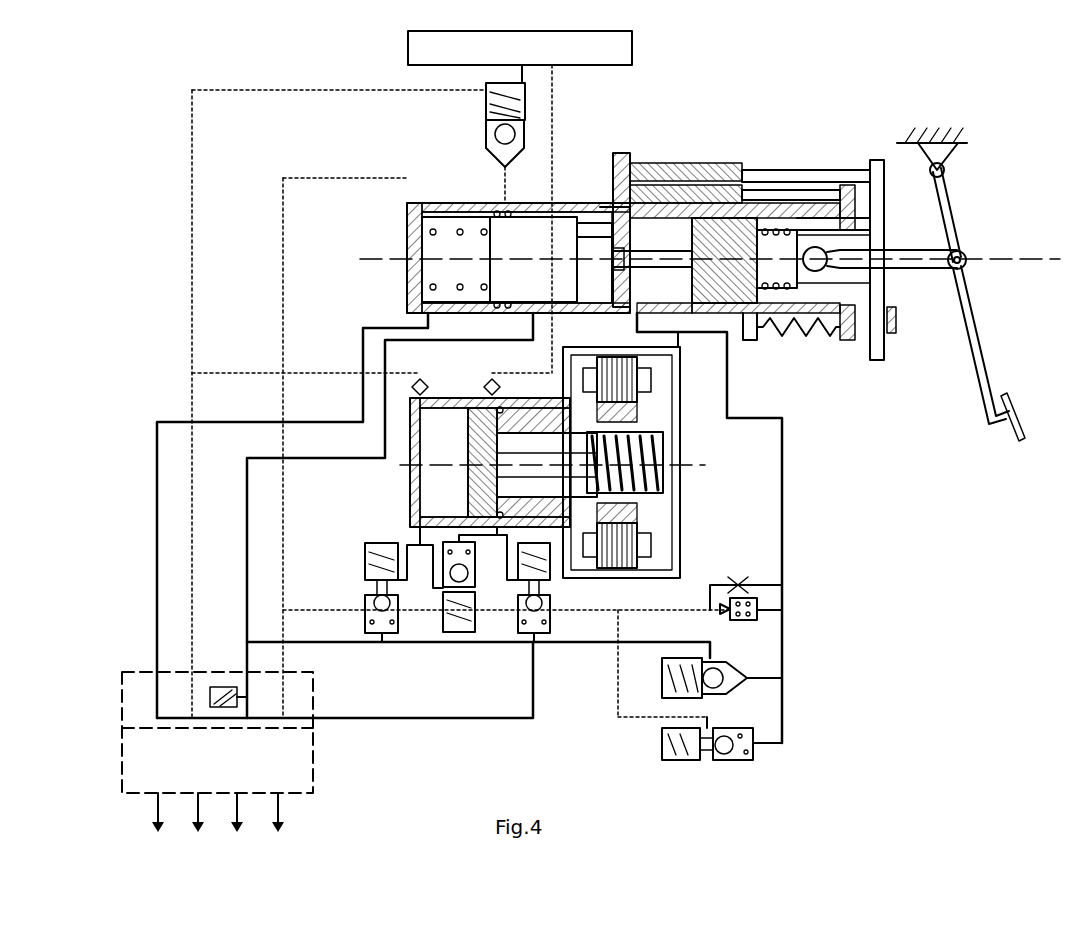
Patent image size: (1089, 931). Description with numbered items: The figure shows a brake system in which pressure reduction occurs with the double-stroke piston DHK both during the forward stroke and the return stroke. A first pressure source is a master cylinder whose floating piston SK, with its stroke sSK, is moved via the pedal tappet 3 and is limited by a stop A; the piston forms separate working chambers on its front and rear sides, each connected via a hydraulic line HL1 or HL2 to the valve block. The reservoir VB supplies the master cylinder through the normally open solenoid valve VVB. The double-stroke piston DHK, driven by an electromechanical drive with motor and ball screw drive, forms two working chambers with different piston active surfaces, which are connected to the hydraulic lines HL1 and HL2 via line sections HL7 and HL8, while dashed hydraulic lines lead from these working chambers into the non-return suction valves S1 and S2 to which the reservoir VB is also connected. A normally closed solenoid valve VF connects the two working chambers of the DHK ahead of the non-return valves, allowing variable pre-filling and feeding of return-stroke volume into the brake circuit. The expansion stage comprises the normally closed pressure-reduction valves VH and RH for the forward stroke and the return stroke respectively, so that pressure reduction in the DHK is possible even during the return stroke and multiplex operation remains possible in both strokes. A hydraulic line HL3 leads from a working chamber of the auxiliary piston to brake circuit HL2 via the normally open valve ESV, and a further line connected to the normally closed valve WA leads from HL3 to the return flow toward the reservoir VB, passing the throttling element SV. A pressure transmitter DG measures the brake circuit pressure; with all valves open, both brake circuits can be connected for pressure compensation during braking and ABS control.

The reservoir VB is at (520, 57).
The normally open solenoid valve VVB is at (486, 126).
The stop A is at (600, 207).
The pedal tappet 3 is at (668, 252).
The piston stroke of piston SK sSK is at (412, 192).
The non-return valve or suction valve S1 is at (420, 380).
The non-return valve or suction valve S2 is at (492, 380).
The double-stroke piston DHK is at (478, 427).
The hydraulic line or brake circuit section HL1 is at (157, 494).
The hydraulic line or brake circuit section HL2 is at (247, 494).
The hydraulic line HL3 is at (782, 536).
The hydraulic line or brake circuit section HL7 is at (316, 648).
The hydraulic line or brake circuit section HL8 is at (372, 722).
The Pab-VH normally closed solenoid valve VH is at (365, 552).
The normally closed solenoid valve VF is at (457, 632).
The Pab-RH normally closed solenoid valve RH is at (560, 600).
The safety valve / throttle SV/D SV is at (760, 618).
The normally open solenoid valve ESV is at (740, 682).
The normally closed solenoid valve WA is at (745, 762).
The pressure transmitter DG is at (229, 687).